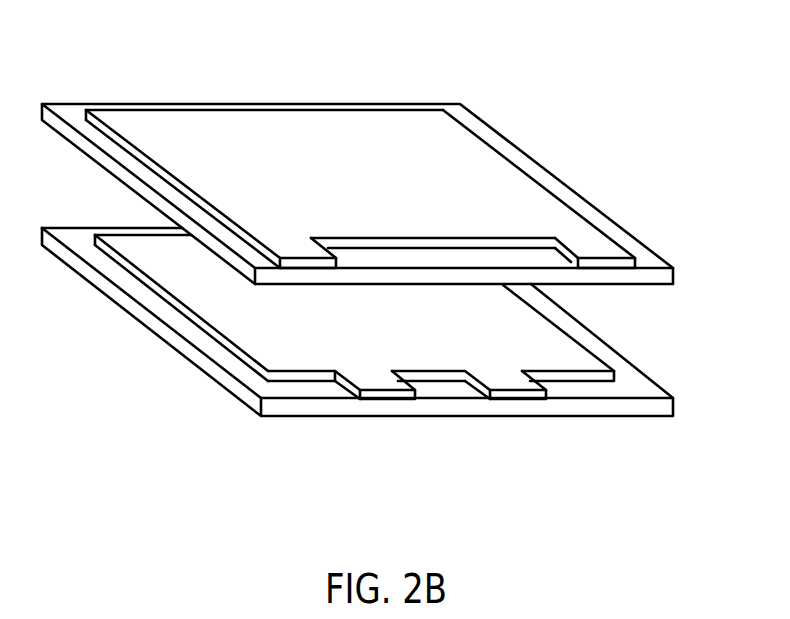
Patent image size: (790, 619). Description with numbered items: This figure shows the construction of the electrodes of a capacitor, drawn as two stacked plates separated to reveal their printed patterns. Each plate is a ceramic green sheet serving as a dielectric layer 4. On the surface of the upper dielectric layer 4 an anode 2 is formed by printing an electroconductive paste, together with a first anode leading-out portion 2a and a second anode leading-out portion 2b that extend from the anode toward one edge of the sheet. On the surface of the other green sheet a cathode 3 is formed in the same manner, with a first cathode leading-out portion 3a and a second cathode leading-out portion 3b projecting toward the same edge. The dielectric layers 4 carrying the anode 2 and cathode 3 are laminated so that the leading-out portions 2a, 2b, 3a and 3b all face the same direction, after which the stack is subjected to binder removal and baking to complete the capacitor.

The anode 2 is at (353, 158).
The first anode leading-out portion 2a is at (290, 245).
The second anode leading-out portion 2b is at (587, 245).
The cathode 3 is at (365, 313).
The first cathode leading-out portion 3a is at (383, 378).
The second cathode leading-out portion 3b is at (503, 373).
The dielectric layer 4 is at (643, 275).